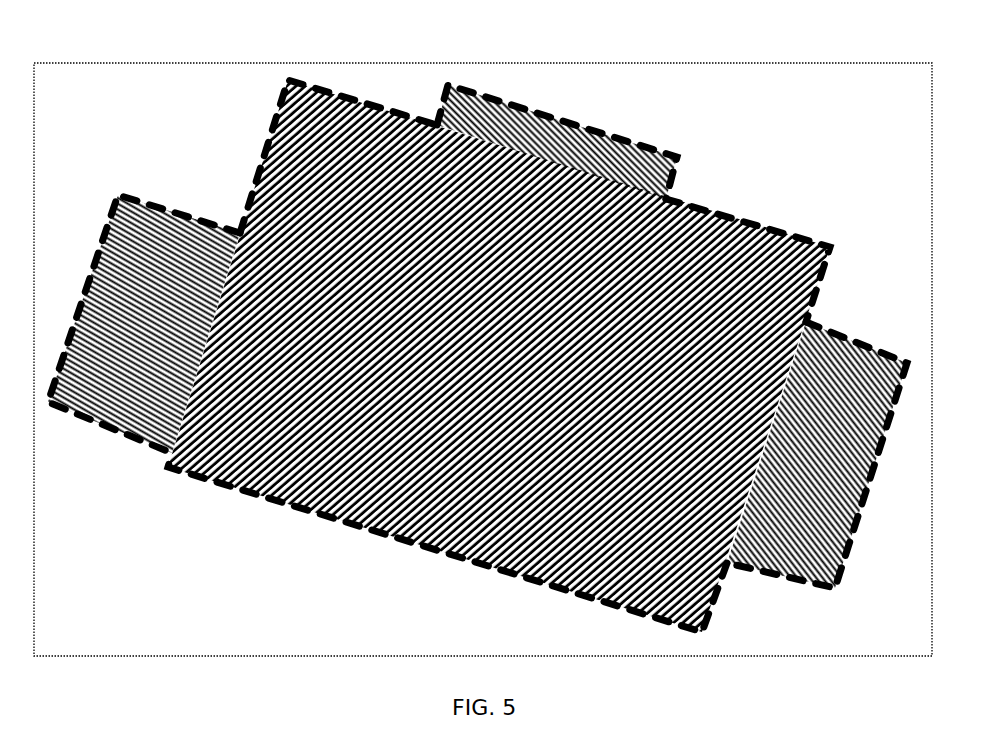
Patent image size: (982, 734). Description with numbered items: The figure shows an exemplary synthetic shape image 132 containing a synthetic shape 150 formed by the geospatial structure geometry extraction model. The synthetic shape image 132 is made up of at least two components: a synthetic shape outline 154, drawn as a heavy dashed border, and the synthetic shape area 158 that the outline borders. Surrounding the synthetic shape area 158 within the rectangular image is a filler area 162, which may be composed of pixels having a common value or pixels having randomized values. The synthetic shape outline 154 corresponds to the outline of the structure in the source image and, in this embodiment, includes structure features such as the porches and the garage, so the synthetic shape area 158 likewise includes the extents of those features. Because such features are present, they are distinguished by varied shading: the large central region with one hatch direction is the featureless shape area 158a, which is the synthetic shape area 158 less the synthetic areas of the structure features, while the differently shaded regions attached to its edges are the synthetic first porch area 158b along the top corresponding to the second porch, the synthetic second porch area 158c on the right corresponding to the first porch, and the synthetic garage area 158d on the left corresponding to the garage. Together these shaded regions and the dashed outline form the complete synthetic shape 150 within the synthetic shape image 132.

The synthetic shape image 132 is at (221, 53).
The synthetic shape 150 is at (702, 209).
The synthetic shape outline 154 is at (848, 338).
The synthetic shape area 158 is at (499, 356).
The featureless shape area 158a is at (499, 356).
The synthetic first porch area 158b is at (563, 120).
The synthetic second porch area 158c is at (818, 457).
The synthetic garage area 158d is at (147, 207).
The filler area 162 is at (868, 166).